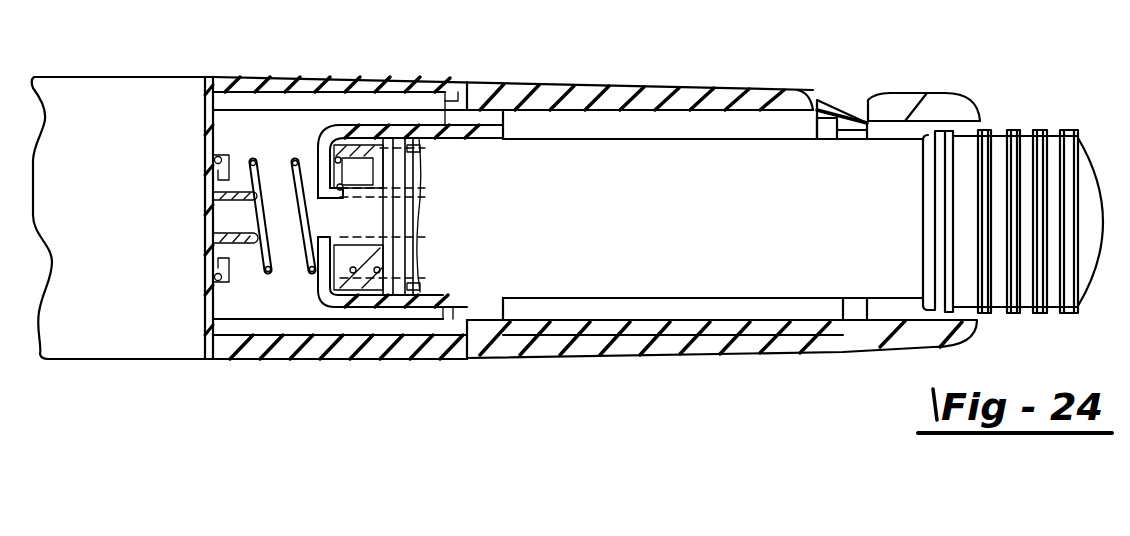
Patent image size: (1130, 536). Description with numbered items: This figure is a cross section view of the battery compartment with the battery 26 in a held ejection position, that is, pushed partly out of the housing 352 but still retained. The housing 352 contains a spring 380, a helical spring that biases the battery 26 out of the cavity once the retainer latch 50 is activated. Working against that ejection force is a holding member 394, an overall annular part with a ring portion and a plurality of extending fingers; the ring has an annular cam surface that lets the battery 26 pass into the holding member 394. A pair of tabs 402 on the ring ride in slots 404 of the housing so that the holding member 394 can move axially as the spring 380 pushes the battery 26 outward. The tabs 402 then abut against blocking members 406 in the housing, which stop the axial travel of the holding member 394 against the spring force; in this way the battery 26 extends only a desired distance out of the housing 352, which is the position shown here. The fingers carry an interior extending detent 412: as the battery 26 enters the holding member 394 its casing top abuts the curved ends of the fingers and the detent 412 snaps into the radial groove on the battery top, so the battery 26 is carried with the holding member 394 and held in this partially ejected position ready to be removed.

The battery 26 is at (645, 223).
The latch 50 is at (846, 97).
The housing 352 is at (323, 292).
The spring 380 is at (257, 160).
The holding member 394 is at (350, 118).
The tabs 402 is at (478, 86).
The slots 404 is at (408, 128).
The blocking members 406 is at (467, 320).
The detent 412 is at (370, 298).